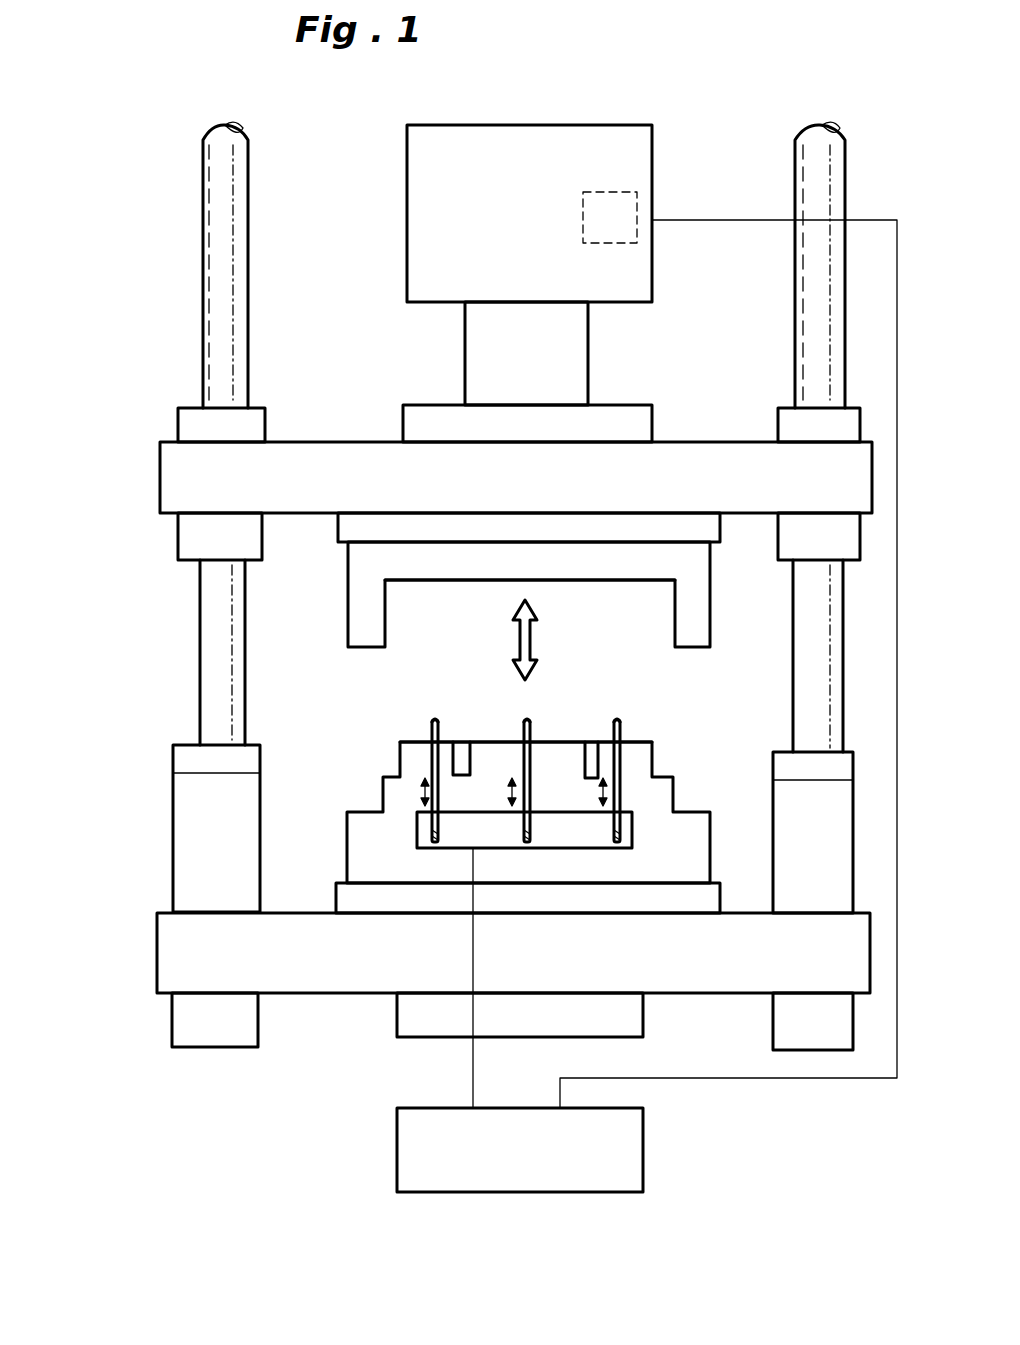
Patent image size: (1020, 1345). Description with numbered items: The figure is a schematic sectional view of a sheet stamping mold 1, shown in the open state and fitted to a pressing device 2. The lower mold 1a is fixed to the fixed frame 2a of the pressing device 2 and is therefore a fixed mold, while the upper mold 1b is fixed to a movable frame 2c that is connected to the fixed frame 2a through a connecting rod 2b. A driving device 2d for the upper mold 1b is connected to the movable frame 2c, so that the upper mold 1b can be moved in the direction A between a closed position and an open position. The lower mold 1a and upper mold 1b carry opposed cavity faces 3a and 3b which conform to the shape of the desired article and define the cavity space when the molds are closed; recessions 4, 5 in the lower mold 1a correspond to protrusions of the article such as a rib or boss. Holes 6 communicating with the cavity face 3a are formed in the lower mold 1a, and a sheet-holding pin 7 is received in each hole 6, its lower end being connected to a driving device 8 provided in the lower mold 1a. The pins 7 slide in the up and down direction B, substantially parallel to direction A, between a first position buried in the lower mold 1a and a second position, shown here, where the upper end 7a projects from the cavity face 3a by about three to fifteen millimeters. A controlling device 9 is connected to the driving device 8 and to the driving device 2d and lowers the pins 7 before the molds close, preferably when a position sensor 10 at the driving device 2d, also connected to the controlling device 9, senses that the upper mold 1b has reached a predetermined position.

The sheet stamping mold 1 is at (298, 663).
The lower mold 1a is at (348, 815).
The upper mold 1b is at (352, 628).
The pressing device 2 is at (85, 208).
The fixed frame 2a is at (157, 945).
The connecting rod 2b is at (212, 638).
The movable frame 2c is at (160, 455).
The driving device 2d is at (407, 243).
The cavity face 3a is at (562, 742).
The cavity face 3b is at (498, 580).
The recession 4 is at (585, 762).
The recession 5 is at (455, 760).
The hole 6 is at (432, 835).
The sheet-holding pin 7 is at (432, 728).
The upper end 7a is at (436, 720).
The driving device 8 is at (632, 826).
The controlling device 9 is at (643, 1182).
The position sensor 10 is at (583, 217).
The direction of upper mold movement A is at (535, 648).
The up and down direction B is at (504, 789).